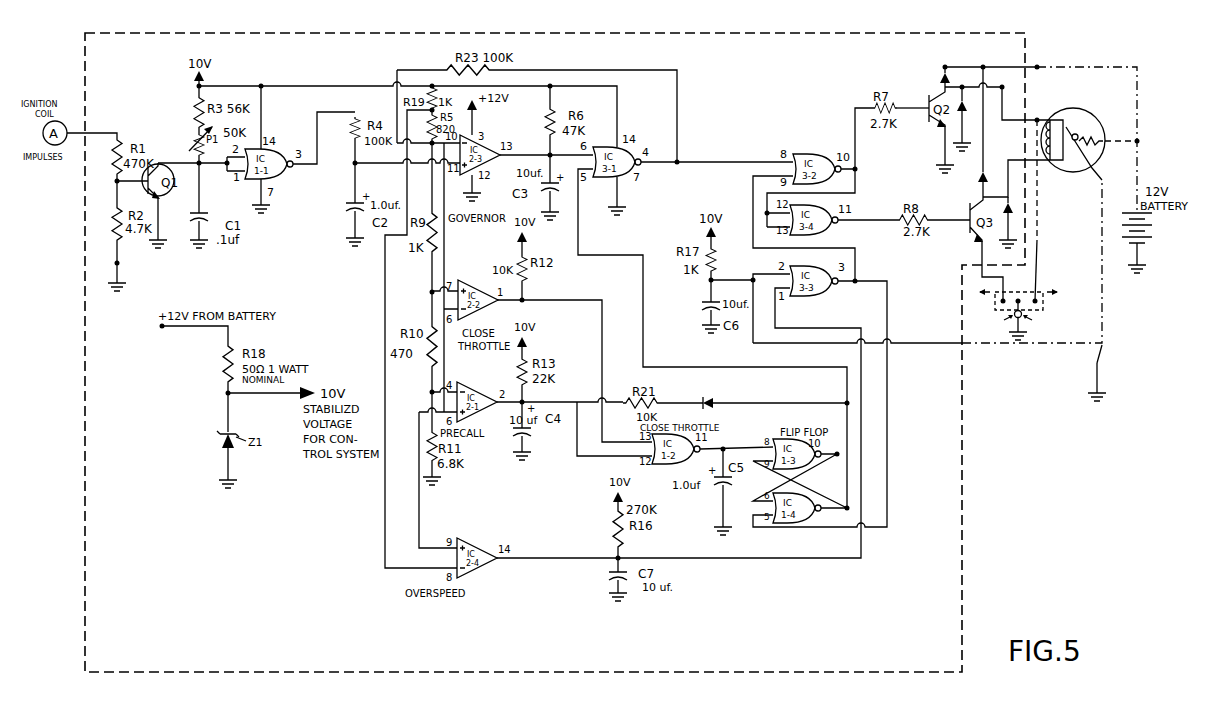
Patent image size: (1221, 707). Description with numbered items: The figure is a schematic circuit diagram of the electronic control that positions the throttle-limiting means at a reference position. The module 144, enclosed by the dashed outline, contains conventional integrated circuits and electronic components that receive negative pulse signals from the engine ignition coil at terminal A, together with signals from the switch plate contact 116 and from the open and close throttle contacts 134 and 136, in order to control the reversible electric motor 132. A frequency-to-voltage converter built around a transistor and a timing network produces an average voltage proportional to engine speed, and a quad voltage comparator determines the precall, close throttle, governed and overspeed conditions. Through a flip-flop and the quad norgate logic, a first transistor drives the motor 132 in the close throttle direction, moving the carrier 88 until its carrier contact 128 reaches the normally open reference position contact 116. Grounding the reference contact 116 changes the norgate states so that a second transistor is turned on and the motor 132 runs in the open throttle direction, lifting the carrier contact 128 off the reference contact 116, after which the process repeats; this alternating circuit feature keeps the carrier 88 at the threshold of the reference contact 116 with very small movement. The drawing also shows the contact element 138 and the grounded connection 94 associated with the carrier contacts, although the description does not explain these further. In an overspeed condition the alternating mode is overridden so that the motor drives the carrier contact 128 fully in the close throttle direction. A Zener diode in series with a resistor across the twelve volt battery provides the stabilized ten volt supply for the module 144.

The reversible electric motor 132 is at (1079, 109).
The movable contact 138 is at (1020, 296).
The close throttle contact 136 is at (1043, 303).
The open throttle contact 134 is at (1003, 305).
The carrier 88 is at (1045, 311).
The ground connection 94 is at (1014, 334).
The reference position contact 116 is at (1093, 348).
The carrier contact 128 is at (1098, 359).
The module 144 is at (962, 493).